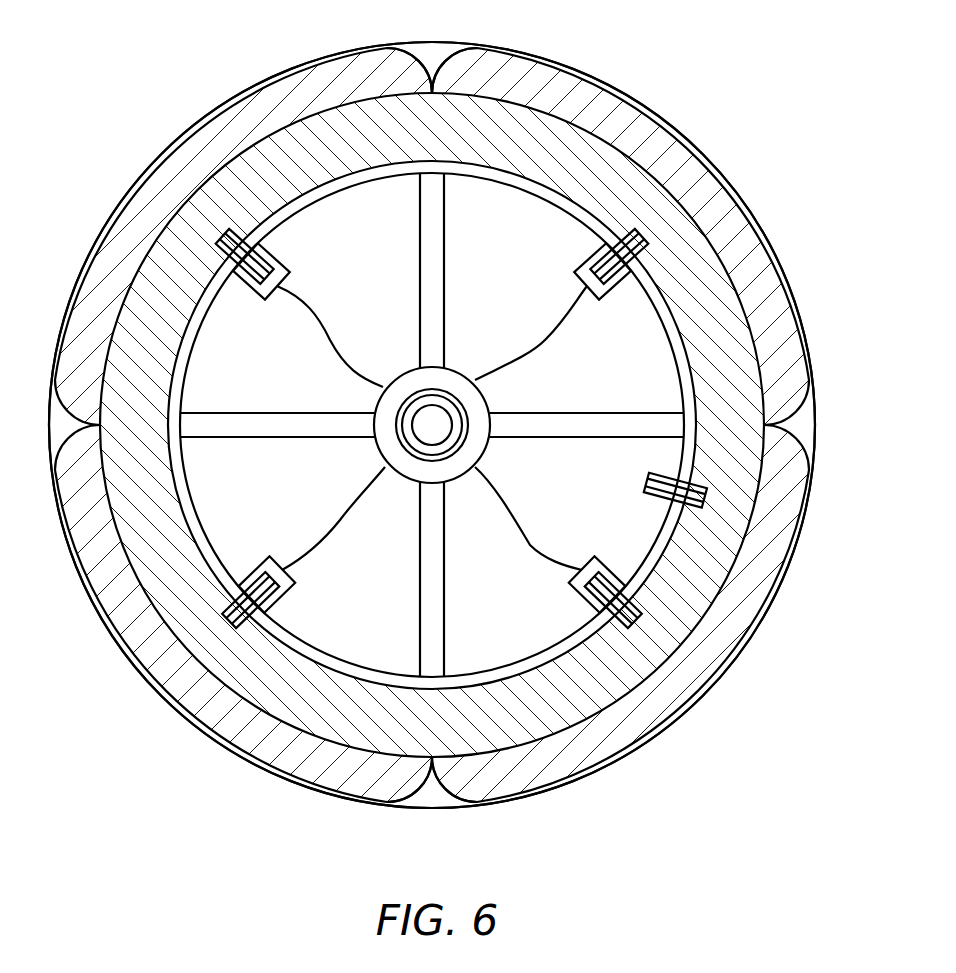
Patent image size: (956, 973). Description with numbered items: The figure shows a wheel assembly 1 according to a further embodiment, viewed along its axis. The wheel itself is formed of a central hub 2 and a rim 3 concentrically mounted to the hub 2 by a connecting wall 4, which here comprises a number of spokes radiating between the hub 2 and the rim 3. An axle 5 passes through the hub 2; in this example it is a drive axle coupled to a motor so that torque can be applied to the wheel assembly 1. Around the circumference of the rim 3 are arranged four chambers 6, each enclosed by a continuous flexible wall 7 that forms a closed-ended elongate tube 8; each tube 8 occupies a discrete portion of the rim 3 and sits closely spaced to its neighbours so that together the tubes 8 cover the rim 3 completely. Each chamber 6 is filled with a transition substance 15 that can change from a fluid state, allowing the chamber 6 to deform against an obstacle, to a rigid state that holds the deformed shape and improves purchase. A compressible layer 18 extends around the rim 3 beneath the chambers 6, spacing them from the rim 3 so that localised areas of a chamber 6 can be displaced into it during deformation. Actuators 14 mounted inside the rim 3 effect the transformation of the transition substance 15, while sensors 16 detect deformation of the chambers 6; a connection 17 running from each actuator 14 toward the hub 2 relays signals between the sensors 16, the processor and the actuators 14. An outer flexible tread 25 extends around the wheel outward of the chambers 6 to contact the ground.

The wheel assembly 1 is at (694, 58).
The hub 2 is at (383, 447).
The rim 3 is at (668, 336).
The connecting wall 4 is at (442, 240).
The axle 5 is at (441, 432).
The chamber 6 is at (313, 82).
The flexible wall 7 is at (597, 80).
The tube 8 is at (557, 66).
The actuator 14 is at (270, 302).
The transition substance 15 is at (188, 162).
The sensor 16 is at (283, 232).
The connection 17 is at (322, 312).
The compressible layer 18 is at (470, 117).
The tread 25 is at (436, 812).